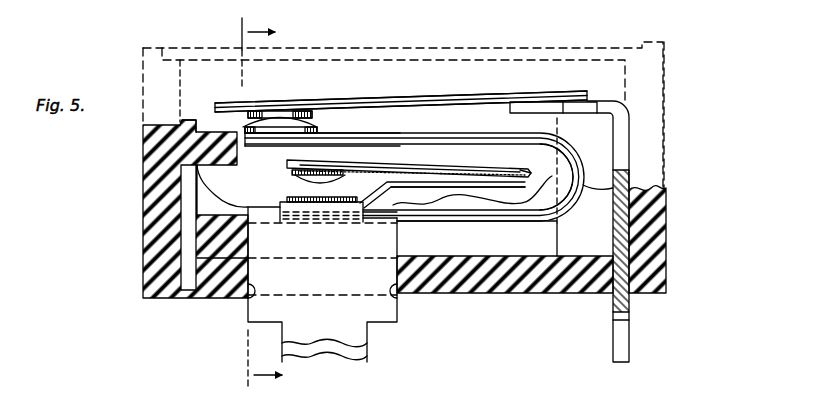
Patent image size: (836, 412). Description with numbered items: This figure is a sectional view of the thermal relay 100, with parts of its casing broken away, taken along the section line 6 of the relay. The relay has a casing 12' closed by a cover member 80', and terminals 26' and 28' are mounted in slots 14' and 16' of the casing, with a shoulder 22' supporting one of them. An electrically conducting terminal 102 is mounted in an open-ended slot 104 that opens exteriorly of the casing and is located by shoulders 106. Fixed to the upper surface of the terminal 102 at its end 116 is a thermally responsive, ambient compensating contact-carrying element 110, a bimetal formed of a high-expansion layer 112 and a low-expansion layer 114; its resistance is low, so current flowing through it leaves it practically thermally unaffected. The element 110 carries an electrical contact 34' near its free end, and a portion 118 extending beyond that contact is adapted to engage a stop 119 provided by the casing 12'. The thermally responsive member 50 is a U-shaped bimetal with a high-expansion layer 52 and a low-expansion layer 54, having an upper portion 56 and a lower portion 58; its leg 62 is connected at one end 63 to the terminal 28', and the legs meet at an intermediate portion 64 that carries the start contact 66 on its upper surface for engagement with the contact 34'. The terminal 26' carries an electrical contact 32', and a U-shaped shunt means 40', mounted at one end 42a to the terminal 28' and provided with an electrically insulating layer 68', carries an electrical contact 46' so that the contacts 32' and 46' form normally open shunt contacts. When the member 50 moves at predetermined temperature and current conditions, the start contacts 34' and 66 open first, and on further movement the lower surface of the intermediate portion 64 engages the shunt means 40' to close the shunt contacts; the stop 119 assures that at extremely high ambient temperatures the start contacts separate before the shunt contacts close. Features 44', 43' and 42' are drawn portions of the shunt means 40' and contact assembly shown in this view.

The section line 6 is at (230, 32).
The thermal relay 100 is at (688, 70).
The cover member 80' is at (403, 100).
The casing 12' is at (429, 170).
The stop 119 is at (200, 140).
The shoulder 22' is at (374, 196).
The open-ended slot 104 is at (658, 274).
The terminal 102 is at (627, 327).
The shoulders 106 is at (598, 108).
The ambient compensating contact-carrying element 110 is at (370, 97).
The portion of bimetal element 118 is at (290, 102).
The high-expansion layer 112 is at (410, 97).
The low-expansion layer 114 is at (408, 104).
The end of bimetal element 116 is at (543, 96).
The electrical contact 34' is at (260, 121).
The contact 66 is at (312, 127).
The intermediate portion 64 is at (284, 140).
The upper portion 56 is at (526, 132).
The high-expansion layer 52 is at (400, 136).
The thermally responsive member 50 is at (453, 150).
The lower portion 58 is at (510, 224).
The leg 62 is at (553, 176).
The low-expansion layer 54 is at (409, 162).
The electrically insulating layer 68' is at (410, 158).
The contact arm tip 44' is at (513, 160).
The shunt means 40' is at (412, 185).
The electrical contact 46' is at (299, 173).
The contact blade bend 43' is at (433, 191).
The contact blade 42' is at (458, 193).
The electrical contact 32' is at (306, 192).
The end of leg 63 is at (322, 218).
The end of shunt means 42a is at (312, 203).
The slot 14' is at (224, 310).
The slot 16' is at (421, 304).
The terminal 28' is at (350, 339).
The terminal 26' is at (350, 358).